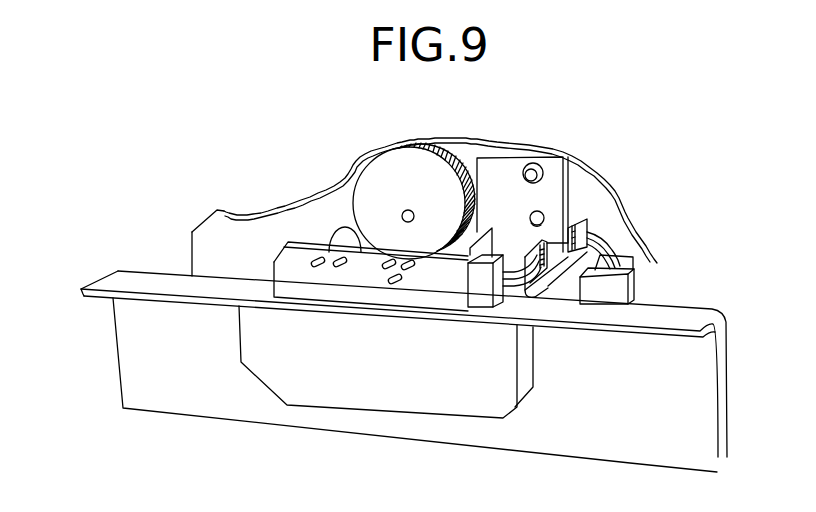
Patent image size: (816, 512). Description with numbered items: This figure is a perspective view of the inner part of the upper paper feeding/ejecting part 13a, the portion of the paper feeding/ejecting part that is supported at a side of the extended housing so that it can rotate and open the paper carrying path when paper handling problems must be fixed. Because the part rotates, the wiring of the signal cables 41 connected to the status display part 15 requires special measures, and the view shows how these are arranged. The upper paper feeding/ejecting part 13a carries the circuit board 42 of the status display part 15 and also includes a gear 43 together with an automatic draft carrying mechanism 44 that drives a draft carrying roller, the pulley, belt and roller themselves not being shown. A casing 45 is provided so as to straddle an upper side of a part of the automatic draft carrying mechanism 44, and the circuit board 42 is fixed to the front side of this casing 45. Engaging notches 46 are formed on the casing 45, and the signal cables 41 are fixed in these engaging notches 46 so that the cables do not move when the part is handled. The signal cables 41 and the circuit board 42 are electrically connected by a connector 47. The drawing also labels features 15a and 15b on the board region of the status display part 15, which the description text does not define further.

The upper paper feeding/ejecting part 13a is at (143, 362).
The status display part 15 is at (357, 272).
The mounting bar 15a is at (311, 219).
The holes 15b is at (402, 257).
The signal cables 41 is at (545, 293).
The circuit board 42 is at (432, 287).
The gear 43 is at (416, 178).
The automatic draft carrying mechanism 44 is at (620, 252).
The casing 45 is at (512, 178).
The engaging notches 46 is at (545, 243).
The connector 47 is at (481, 288).